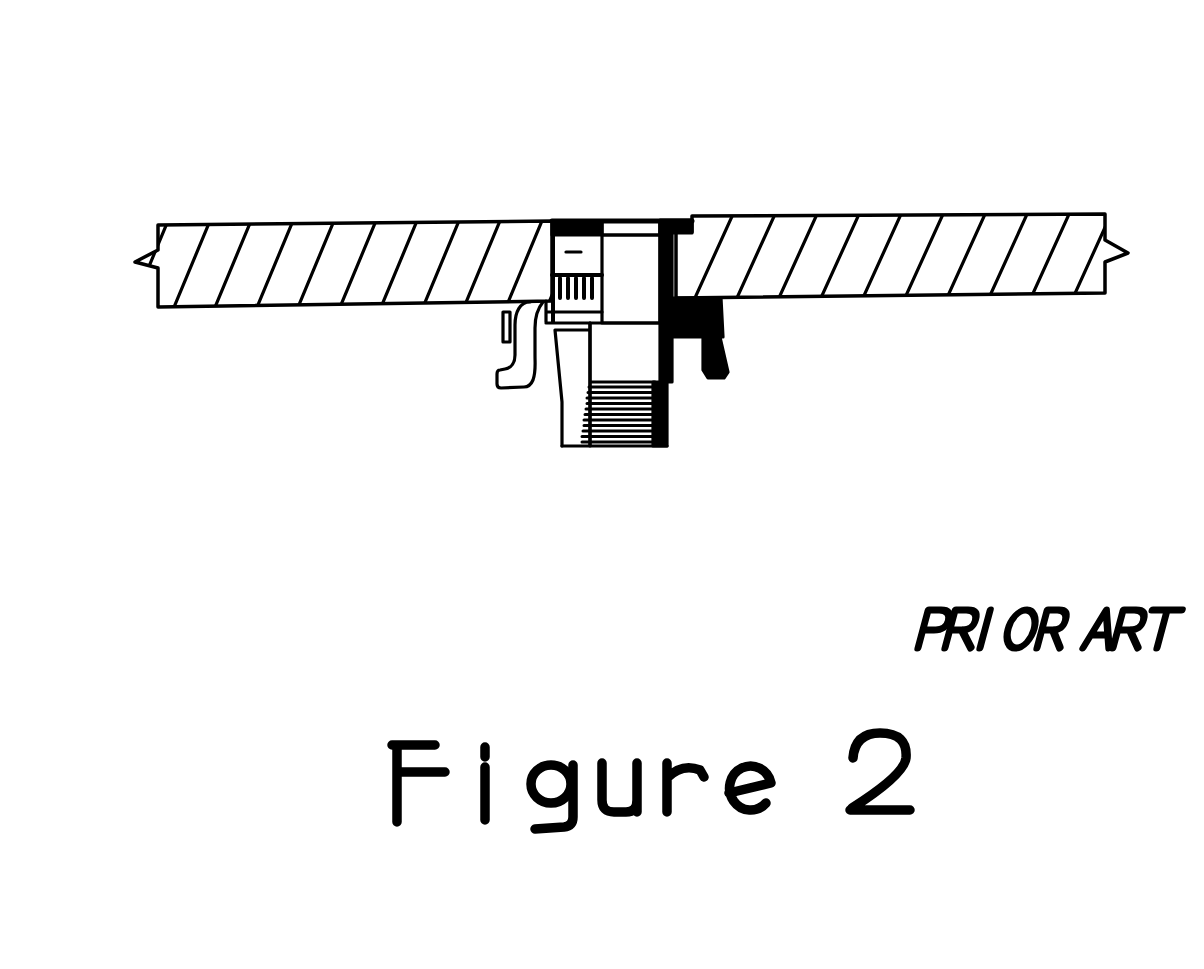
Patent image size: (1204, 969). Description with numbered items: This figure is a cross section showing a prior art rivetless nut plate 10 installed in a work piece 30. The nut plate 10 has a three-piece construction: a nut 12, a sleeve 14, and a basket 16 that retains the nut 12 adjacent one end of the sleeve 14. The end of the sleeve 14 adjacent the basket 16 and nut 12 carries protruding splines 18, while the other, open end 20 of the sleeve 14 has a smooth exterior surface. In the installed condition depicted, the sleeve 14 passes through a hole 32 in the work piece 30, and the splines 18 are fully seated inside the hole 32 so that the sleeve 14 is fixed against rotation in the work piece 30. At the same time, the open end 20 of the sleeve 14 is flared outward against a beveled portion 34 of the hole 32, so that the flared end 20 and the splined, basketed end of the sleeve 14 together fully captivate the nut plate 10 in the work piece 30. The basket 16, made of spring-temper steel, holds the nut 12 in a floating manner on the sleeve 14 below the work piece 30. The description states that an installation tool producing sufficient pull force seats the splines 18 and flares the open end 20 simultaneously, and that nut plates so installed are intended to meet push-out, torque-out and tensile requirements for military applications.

The rivetless nut plate 10 is at (365, 600).
The nut 12 is at (667, 433).
The sleeve 14 is at (552, 274).
The basket 16 is at (724, 348).
The splines 18 is at (550, 281).
The open end 20 is at (647, 221).
The work piece 30 is at (957, 245).
The hole 32 is at (673, 270).
The beveled portion 34 is at (688, 216).